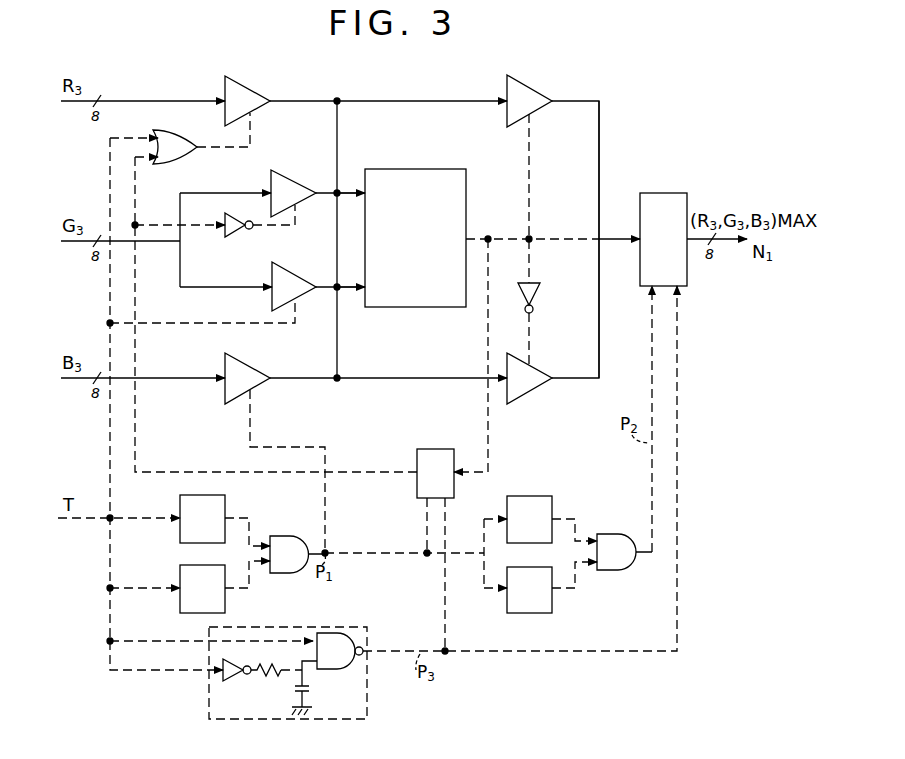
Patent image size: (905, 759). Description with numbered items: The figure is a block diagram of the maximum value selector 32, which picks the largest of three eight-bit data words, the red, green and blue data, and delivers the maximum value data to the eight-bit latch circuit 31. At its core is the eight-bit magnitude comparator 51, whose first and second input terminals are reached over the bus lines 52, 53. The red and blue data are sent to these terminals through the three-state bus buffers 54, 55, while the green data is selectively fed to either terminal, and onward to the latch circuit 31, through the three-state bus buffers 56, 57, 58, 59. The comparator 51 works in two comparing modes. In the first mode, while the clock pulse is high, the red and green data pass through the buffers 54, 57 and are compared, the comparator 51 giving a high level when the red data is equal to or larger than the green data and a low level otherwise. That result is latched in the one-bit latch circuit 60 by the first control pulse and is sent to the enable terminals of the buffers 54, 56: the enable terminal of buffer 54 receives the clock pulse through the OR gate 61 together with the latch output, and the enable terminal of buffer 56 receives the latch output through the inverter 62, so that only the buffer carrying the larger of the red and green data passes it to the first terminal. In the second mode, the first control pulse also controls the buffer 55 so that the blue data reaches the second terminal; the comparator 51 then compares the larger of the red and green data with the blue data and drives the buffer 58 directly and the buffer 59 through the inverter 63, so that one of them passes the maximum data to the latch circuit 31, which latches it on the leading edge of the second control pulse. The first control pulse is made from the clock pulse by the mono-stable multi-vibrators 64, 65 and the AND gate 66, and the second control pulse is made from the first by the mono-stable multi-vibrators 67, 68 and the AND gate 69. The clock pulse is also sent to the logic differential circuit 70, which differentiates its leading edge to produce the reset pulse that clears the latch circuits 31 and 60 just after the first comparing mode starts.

The 8-bits latch circuit 31 is at (663, 193).
The maximum value selector 32 is at (601, 79).
The 8-bits magnitude comparator 51 is at (422, 169).
The bus line 52 is at (343, 196).
The bus line 53 is at (343, 286).
The bus buffer 54 is at (248, 89).
The bus buffer 55 is at (255, 369).
The bus buffer 56 is at (293, 181).
The bus buffer 57 is at (296, 275).
The bus buffer 58 is at (537, 92).
The bus buffer 59 is at (531, 391).
The one-bit latch circuit 60 is at (440, 449).
The OR gate 61 is at (181, 160).
The inverter 62 is at (227, 236).
The inverter 63 is at (538, 291).
The mono-stable multi-vibrator 64 is at (225, 505).
The mono-stable multi-vibrator 65 is at (225, 603).
The AND gate 66 is at (292, 536).
The mono-stable multi-vibrator 67 is at (545, 496).
The mono-stable multi-vibrator 68 is at (548, 613).
The AND gate 69 is at (613, 534).
The logic differential circuit 70 is at (367, 688).